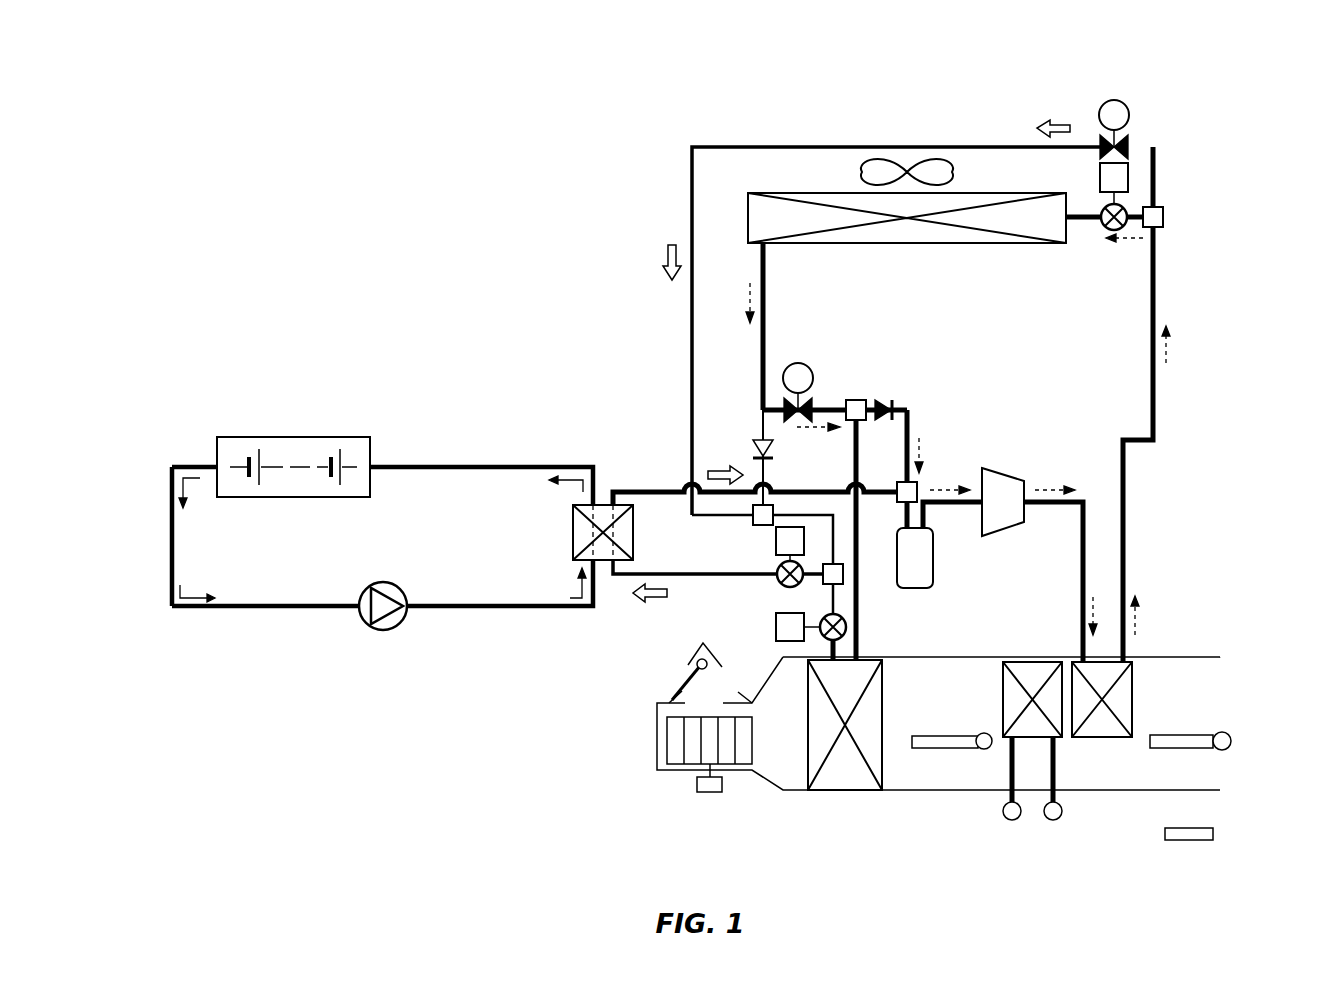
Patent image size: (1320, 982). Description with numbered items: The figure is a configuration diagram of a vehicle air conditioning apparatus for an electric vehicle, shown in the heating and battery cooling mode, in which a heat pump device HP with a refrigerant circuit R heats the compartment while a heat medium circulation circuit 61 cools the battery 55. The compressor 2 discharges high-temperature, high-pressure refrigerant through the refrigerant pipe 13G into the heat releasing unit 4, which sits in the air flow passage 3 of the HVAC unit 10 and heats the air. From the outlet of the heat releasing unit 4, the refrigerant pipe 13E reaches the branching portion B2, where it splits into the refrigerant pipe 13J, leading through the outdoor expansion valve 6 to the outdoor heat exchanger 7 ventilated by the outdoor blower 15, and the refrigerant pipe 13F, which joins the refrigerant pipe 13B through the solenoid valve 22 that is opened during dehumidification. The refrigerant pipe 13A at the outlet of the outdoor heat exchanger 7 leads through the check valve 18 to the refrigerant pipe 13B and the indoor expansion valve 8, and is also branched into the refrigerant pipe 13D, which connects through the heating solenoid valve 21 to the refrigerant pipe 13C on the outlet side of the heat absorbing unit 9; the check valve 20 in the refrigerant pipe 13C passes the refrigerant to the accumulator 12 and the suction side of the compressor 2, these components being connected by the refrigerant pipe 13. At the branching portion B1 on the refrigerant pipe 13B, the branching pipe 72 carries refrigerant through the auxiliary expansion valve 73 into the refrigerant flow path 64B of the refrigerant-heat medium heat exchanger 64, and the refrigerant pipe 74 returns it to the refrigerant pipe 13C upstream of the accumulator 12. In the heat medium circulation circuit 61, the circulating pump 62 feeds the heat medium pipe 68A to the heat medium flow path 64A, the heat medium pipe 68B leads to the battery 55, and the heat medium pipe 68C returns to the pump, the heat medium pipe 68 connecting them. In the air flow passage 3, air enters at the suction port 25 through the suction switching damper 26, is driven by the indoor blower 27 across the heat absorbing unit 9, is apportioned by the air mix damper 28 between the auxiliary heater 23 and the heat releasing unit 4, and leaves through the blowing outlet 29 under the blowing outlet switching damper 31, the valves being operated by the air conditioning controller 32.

The compressor 2 is at (1002, 472).
The air flow passage 3 is at (930, 660).
The heat releasing unit 4 is at (1134, 699).
The outdoor expansion valve 6 is at (1103, 232).
The outdoor heat exchanger 7 is at (798, 193).
The indoor expansion valve 8 is at (820, 622).
The heat absorbing unit 9 is at (808, 760).
The HVAC unit 10 is at (973, 655).
The accumulator 12 is at (932, 561).
The refrigerant pipe 13 is at (1134, 489).
The refrigerant pipe 13A is at (767, 294).
The refrigerant pipe 13B is at (835, 538).
The refrigerant pipe 13C is at (894, 442).
The refrigerant pipe 13D is at (837, 408).
The refrigerant pipe 13E is at (1128, 526).
The refrigerant pipe 13F is at (989, 147).
The refrigerant pipe 13G is at (1084, 555).
The refrigerant pipe 13J is at (1138, 210).
The outdoor blower 15 is at (900, 170).
The check valve 18 is at (754, 447).
The check valve 20 is at (886, 400).
The solenoid valve 21 is at (812, 400).
The solenoid valve 22 is at (1125, 145).
The auxiliary heater 23 is at (1033, 660).
The suction port 25 is at (727, 690).
The suction switching damper 26 is at (678, 690).
The indoor blower 27 is at (667, 757).
The air mix damper 28 is at (937, 750).
The blowing outlet 29 is at (1215, 683).
The blowing outlet switching damper 31 is at (1195, 750).
The air conditioning controller 32 is at (1190, 840).
The battery 55 is at (297, 437).
The heat medium circulation circuit 61 is at (190, 425).
The circulating pump 62 is at (386, 632).
The refrigerant-heat medium heat exchanger 64 is at (573, 540).
The heat medium flow path 64A is at (575, 510).
The refrigerant flow path 64B is at (635, 535).
The heat medium pipe 68 is at (252, 608).
The heat medium pipe 68A is at (527, 608).
The heat medium pipe 68B is at (487, 467).
The heat medium pipe 68C is at (176, 535).
The branching pipe 72 is at (703, 578).
The auxiliary expansion valve 73 is at (777, 572).
The refrigerant pipe 74 is at (630, 490).
The branching portion B1 is at (838, 584).
The branching portion B2 is at (1164, 217).
The refrigerant circuit R is at (1161, 297).
The heat pump device HP is at (1200, 341).